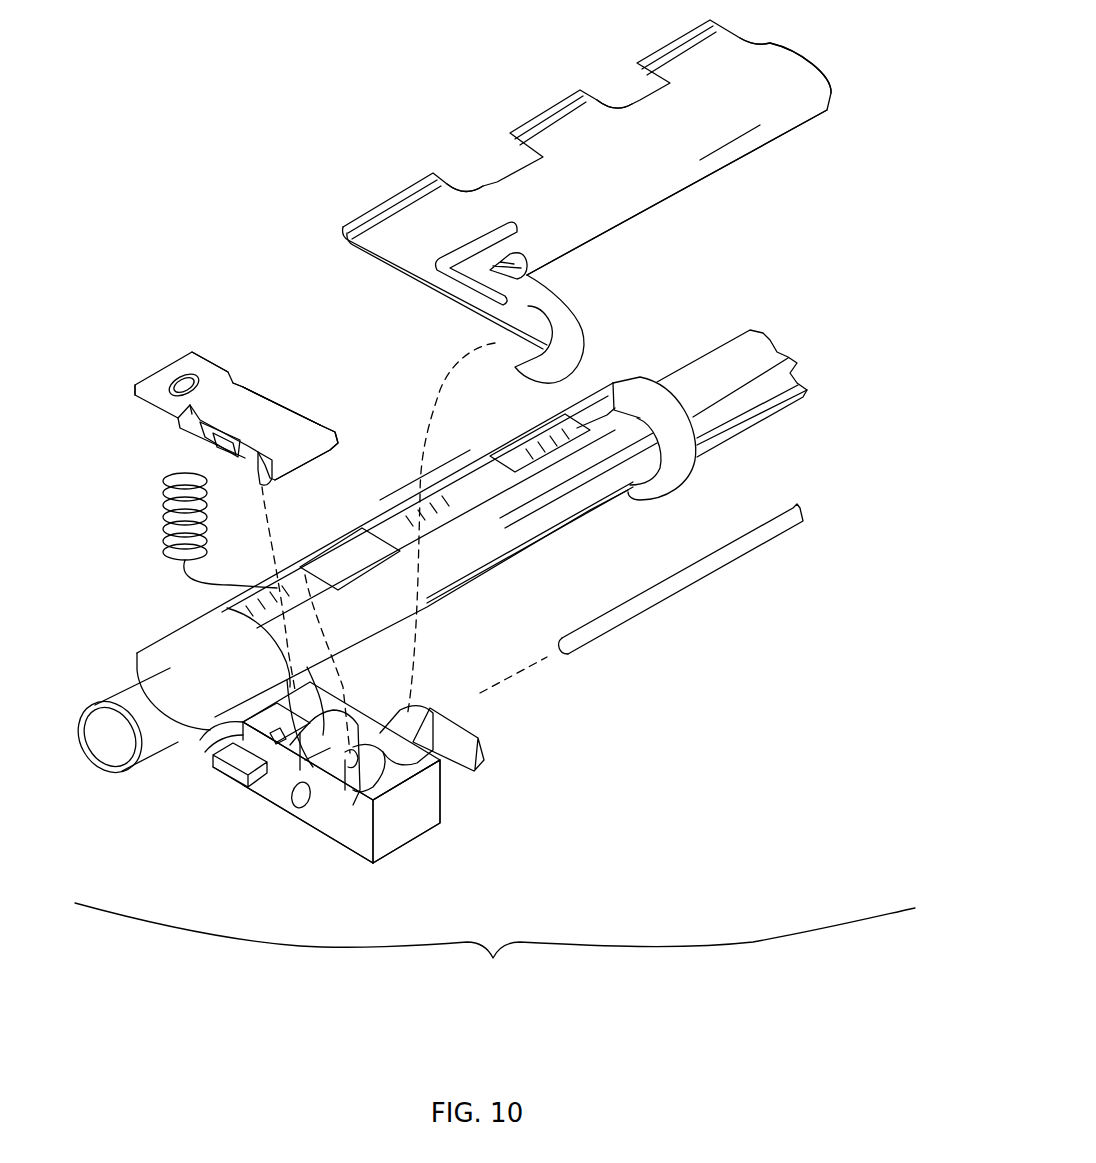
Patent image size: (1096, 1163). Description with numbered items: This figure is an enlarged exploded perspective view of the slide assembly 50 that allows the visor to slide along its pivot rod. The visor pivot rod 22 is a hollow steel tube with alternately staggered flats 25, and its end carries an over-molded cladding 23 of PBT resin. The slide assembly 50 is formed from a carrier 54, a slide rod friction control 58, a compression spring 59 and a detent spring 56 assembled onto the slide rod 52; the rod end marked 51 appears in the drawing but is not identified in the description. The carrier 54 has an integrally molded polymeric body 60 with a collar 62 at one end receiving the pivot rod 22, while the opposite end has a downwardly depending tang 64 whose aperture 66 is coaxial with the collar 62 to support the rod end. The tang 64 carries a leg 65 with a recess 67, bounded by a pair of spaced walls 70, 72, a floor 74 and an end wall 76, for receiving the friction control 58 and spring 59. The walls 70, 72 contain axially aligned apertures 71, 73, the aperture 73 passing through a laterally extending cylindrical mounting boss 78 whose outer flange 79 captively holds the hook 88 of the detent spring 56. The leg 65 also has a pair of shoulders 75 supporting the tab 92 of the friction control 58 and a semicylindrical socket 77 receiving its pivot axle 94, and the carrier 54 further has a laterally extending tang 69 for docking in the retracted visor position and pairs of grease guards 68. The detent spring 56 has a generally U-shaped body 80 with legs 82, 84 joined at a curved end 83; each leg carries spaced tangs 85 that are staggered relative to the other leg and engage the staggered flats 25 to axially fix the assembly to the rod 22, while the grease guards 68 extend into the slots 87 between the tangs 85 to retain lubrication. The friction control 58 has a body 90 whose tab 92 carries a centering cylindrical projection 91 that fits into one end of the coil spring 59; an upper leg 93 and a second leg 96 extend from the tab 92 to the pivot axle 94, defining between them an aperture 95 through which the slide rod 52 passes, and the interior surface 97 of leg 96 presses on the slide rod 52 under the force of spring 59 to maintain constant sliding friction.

The visor pivot rod 22 is at (123, 682).
The over-molded cladding 23 is at (727, 340).
The flats 25 is at (283, 587).
The slide assembly 50 is at (495, 950).
The pin end 51 is at (557, 653).
The slide rod 52 is at (737, 577).
The carrier 54 is at (463, 453).
The detent spring 56 is at (690, 193).
The slide rod friction control 58 is at (243, 343).
The compression spring 59 is at (157, 513).
The body 60 is at (387, 495).
The collar 62 is at (687, 467).
The tang 64 is at (230, 810).
The leg 65 is at (253, 800).
The aperture 66 is at (140, 667).
The recess 67 is at (383, 777).
The grease guards 68 is at (357, 560).
The tang 69 is at (227, 770).
The wall 70 is at (280, 783).
The aperture 71 is at (300, 808).
The wall 72 is at (317, 720).
The aperture 73 is at (353, 762).
The floor 74 is at (273, 733).
The shoulders 75 is at (300, 690).
The end wall 76 is at (433, 790).
The semicylindrical socket 77 is at (347, 760).
The cylindrical mounting boss 78 is at (420, 705).
The outer flange 79 is at (487, 757).
The U-shaped body 80 is at (803, 50).
The leg 82 is at (777, 43).
The curved end 83 is at (787, 123).
The leg 84 is at (508, 266).
The tangs 85 is at (687, 33).
The slots 87 is at (593, 97).
The hook 88 is at (577, 360).
The body 90 is at (250, 380).
The centering cylindrical projection 91 is at (183, 387).
The tab 92 is at (210, 350).
The upper leg 93 is at (263, 410).
The pivot axle 94 is at (330, 430).
The aperture 95 is at (207, 447).
The second leg 96 is at (233, 453).
The interior surface 97 is at (232, 452).